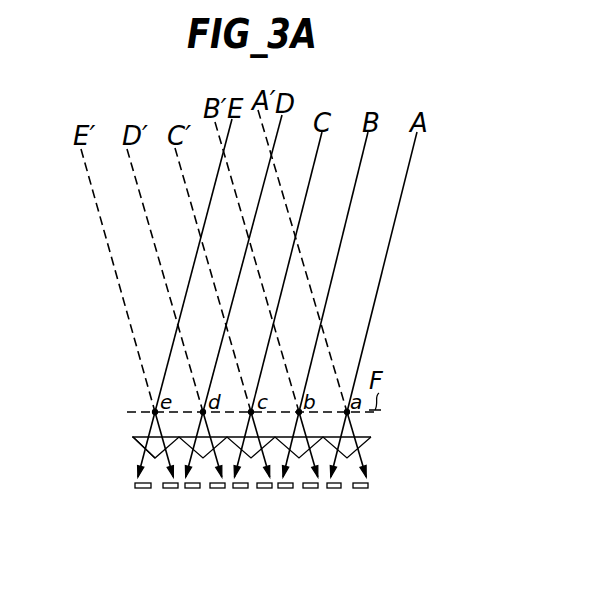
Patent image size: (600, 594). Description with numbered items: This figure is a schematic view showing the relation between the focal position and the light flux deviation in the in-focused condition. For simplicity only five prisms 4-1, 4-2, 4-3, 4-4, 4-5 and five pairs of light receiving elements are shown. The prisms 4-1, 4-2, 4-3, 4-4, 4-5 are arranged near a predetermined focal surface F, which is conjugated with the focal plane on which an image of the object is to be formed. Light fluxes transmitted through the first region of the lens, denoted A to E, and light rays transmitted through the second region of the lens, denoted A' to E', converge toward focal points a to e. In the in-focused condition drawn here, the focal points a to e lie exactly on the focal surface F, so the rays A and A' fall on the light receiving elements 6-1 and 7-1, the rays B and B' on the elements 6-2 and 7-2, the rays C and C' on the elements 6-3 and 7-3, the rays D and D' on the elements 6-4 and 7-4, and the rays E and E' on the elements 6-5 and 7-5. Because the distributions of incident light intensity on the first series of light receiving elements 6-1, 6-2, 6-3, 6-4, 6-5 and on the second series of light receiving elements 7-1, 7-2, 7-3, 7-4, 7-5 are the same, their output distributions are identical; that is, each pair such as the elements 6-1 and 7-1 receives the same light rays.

The prism 4-1 is at (370, 437).
The prism 4-2 is at (331, 396).
The prism 4-3 is at (232, 405).
The prism 4-4 is at (184, 437).
The prism 4-5 is at (143, 441).
The light receiving element 6-1 is at (339, 490).
The light receiving element 6-2 is at (290, 490).
The light receiving element 6-3 is at (241, 490).
The light receiving element 6-4 is at (191, 490).
The light receiving element 6-5 is at (140, 490).
The light receiving element 7-1 is at (370, 485).
The light receiving element 7-2 is at (319, 490).
The light receiving element 7-3 is at (270, 490).
The light receiving element 7-4 is at (217, 490).
The light receiving element 7-5 is at (168, 490).